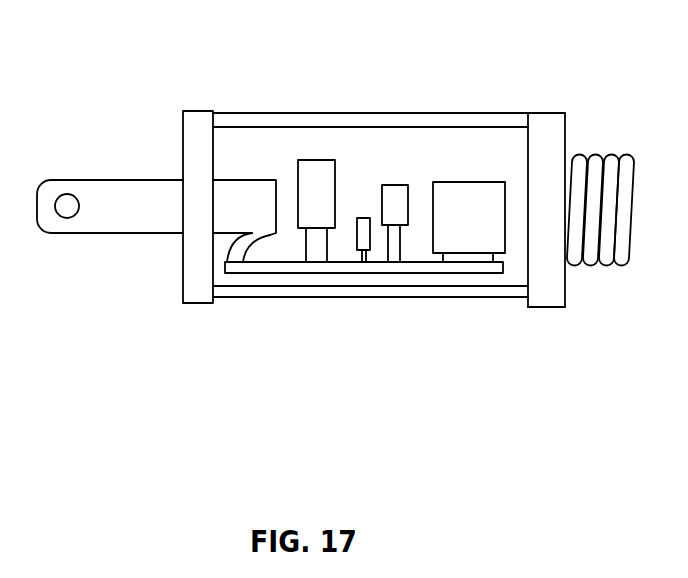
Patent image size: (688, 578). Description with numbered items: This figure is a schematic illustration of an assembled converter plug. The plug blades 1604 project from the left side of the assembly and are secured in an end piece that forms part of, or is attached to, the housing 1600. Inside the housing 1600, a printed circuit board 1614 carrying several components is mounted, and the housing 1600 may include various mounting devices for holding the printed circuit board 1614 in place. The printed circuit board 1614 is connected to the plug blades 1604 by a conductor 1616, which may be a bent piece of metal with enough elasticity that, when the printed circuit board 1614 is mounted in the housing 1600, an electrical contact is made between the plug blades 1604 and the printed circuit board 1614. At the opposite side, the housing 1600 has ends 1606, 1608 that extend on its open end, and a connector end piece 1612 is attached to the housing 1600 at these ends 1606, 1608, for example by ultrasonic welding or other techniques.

The housing 1600 is at (373, 298).
The plug blades 1604 is at (90, 175).
The end 1606 is at (527, 116).
The end 1608 is at (528, 305).
The connector end piece 1612 is at (543, 113).
The printed circuit board 1614 is at (282, 273).
The conductor 1616 is at (257, 258).